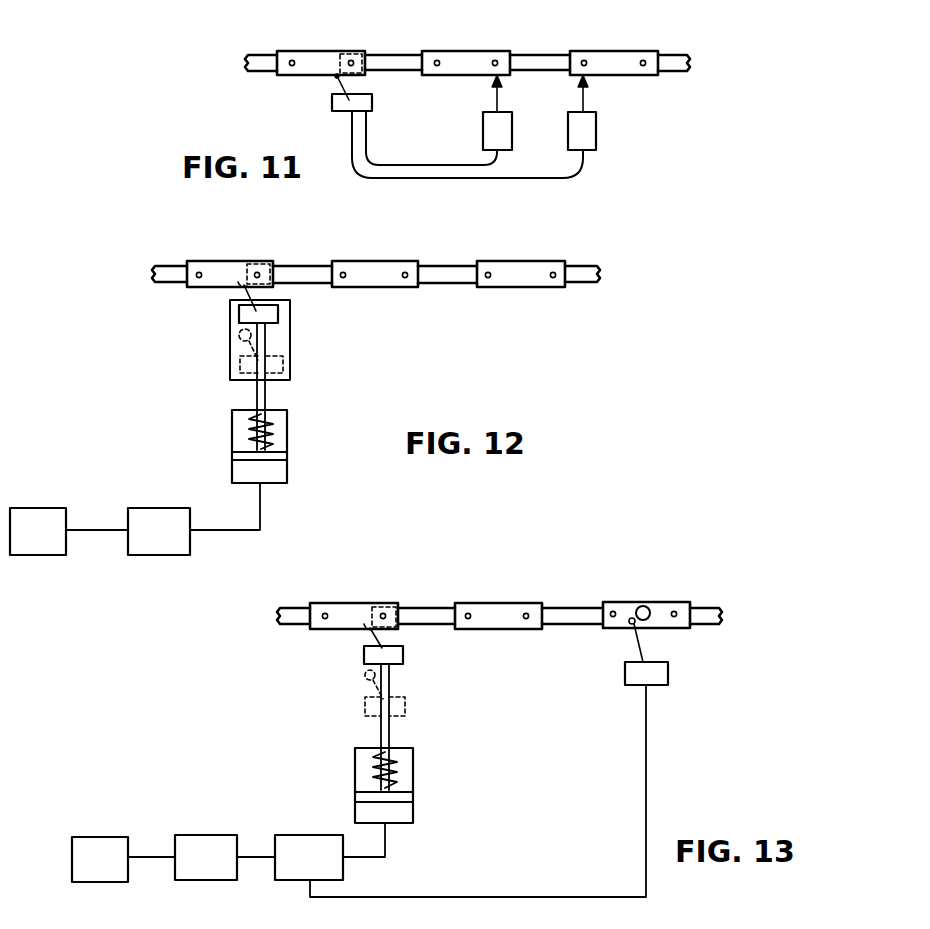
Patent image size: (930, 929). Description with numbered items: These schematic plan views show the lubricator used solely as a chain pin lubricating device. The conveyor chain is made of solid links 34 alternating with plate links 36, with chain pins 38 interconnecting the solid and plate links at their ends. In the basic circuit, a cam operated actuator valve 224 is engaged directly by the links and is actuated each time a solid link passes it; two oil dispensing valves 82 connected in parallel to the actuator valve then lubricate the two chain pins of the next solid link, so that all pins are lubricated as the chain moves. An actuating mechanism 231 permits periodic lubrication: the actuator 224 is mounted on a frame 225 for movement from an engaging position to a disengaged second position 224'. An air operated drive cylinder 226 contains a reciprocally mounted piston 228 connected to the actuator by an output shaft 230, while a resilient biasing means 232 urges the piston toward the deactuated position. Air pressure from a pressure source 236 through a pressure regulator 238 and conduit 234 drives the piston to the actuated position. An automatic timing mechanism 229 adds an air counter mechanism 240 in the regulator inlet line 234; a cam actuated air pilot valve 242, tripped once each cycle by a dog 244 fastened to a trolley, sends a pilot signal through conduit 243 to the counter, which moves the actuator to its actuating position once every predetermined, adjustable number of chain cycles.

In FIG. 11, the solid links 34 is at (397, 54).
In FIG. 12, the solid links 34 is at (300, 262).
In FIG. 13, the solid links 34 is at (425, 606).
In FIG. 11, the plate links 36 is at (291, 52).
In FIG. 12, the plate links 36 is at (371, 262).
In FIG. 13, the plate links 36 is at (487, 603).
In FIG. 11, the chain pins 38 is at (350, 61).
In FIG. 11, the oil dispensing valves 82 is at (483, 135).
In FIG. 11, the cam operated actuator valve 224 is at (457, 116).
In FIG. 12, the cam operated actuator valve 224 is at (295, 298).
In FIG. 13, the cam operated actuator valve 224 is at (421, 661).
In FIG. 12, the second position of actuator 224' is at (303, 355).
In FIG. 12, the frame 225 is at (230, 340).
In FIG. 12, the air operated drive cylinder 226 is at (278, 473).
In FIG. 12, the piston 228 is at (276, 456).
In FIG. 13, the automatic timing mechanism 229 is at (670, 743).
In FIG. 12, the output shaft 230 is at (268, 397).
In FIG. 12, the actuating mechanism 231 is at (184, 482).
In FIG. 13, the actuating mechanism 231 is at (320, 768).
In FIG. 12, the resilient biasing means 232 is at (233, 418).
In FIG. 12, the conduit 234 is at (262, 517).
In FIG. 13, the conduit 234 is at (387, 838).
In FIG. 12, the pressure source 236 is at (45, 556).
In FIG. 13, the pressure source 236 is at (105, 836).
In FIG. 12, the pressure regulator 238 is at (160, 556).
In FIG. 13, the pressure regulator 238 is at (208, 834).
In FIG. 13, the air counter mechanism 240 is at (343, 875).
In FIG. 13, the cam actuated air pilot valve 242 is at (668, 676).
In FIG. 13, the conduit 243 is at (646, 753).
In FIG. 13, the dog 244 is at (650, 608).